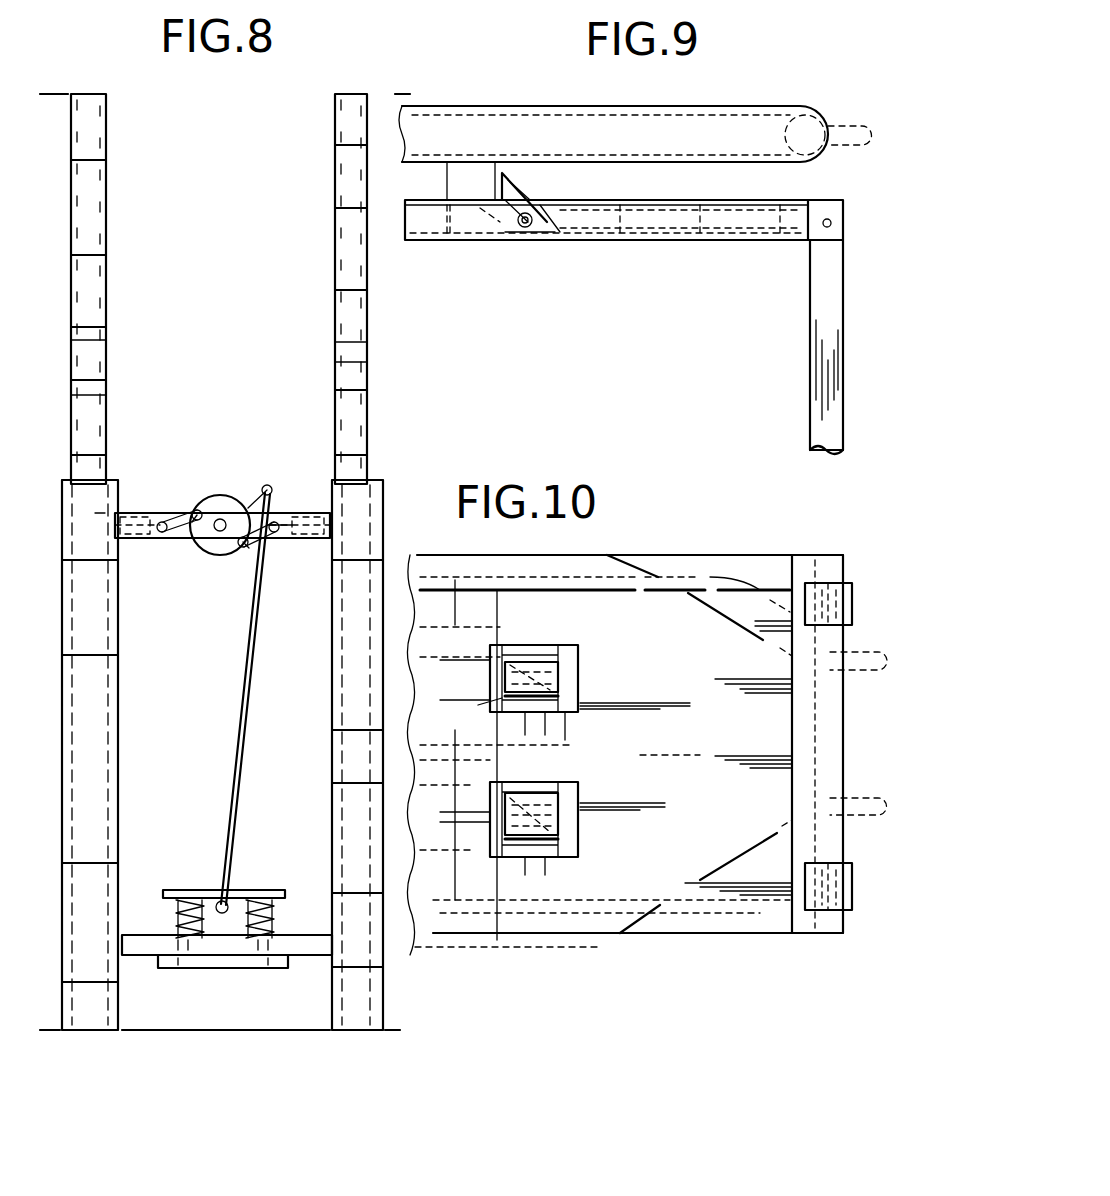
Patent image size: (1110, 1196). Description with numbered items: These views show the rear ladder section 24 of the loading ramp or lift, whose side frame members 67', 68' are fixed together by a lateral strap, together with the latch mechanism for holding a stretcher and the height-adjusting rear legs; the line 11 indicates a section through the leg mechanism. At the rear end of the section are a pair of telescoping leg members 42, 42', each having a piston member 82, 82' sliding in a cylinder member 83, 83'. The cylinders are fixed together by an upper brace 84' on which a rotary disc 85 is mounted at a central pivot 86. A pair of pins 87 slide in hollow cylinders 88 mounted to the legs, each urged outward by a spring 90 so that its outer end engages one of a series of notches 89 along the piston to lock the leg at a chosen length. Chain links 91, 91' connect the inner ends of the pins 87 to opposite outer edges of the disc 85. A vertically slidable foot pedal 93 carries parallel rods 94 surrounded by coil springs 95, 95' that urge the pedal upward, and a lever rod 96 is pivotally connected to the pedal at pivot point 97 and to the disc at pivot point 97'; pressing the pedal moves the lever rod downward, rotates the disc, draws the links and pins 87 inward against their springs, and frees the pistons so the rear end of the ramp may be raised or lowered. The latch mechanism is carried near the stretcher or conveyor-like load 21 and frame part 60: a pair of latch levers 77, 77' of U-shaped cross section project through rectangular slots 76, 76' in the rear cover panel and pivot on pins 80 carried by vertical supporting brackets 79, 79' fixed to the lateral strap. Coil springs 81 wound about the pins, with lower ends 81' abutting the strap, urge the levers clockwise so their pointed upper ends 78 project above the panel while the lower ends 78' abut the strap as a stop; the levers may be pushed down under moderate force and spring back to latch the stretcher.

In FIG. 8, the section line 11 is at (223, 448).
In FIG. 9, the conveyor 21 is at (697, 106).
In FIG. 10, the conveyor 21 is at (607, 548).
In FIG. 9, the ladder section 24 is at (612, 242).
In FIG. 10, the ladder section 24 is at (760, 938).
In FIG. 8, the telescoping leg member 42 is at (123, 755).
In FIG. 9, the telescoping leg member 42 is at (847, 392).
In FIG. 10, the telescoping leg member 42 is at (854, 854).
In FIG. 8, the telescoping leg member 42' is at (381, 755).
In FIG. 10, the telescoping leg member 42' is at (854, 614).
In FIG. 9, the frame member 60 is at (833, 224).
In FIG. 10, the frame member 60 is at (830, 553).
In FIG. 9, the side frame member 67' is at (680, 262).
In FIG. 10, the side frame member 67' is at (590, 777).
In FIG. 9, the side frame member 68' is at (680, 193).
In FIG. 10, the side frame member 68' is at (605, 551).
In FIG. 10, the rectangular slot 76 is at (622, 833).
In FIG. 10, the rectangular slot 76' is at (635, 680).
In FIG. 9, the latch lever 77 is at (546, 198).
In FIG. 10, the latch lever 77 is at (564, 749).
In FIG. 9, the latch lever 77' is at (540, 137).
In FIG. 10, the latch lever 77' is at (579, 721).
In FIG. 9, the upper end 78 is at (510, 149).
In FIG. 10, the upper end 78 is at (500, 751).
In FIG. 9, the lower end 78' is at (557, 270).
In FIG. 10, the vertical supporting bracket 79 is at (533, 682).
In FIG. 10, the vertical supporting bracket 79' is at (555, 725).
In FIG. 9, the pin 80 is at (530, 232).
In FIG. 10, the pin 80 is at (535, 710).
In FIG. 10, the coil spring 81 is at (526, 827).
In FIG. 9, the lower end of coil spring 81' is at (505, 252).
In FIG. 8, the piston member 82 is at (118, 289).
In FIG. 9, the piston member 82 is at (799, 345).
In FIG. 10, the piston member 82 is at (858, 869).
In FIG. 8, the piston member 82' is at (324, 289).
In FIG. 10, the piston member 82' is at (864, 606).
In FIG. 8, the cylinder member 83 is at (113, 755).
In FIG. 8, the cylinder member 83' is at (334, 755).
In FIG. 8, the upper lateral brace 84' is at (222, 548).
In FIG. 8, the rotary disc 85 is at (236, 497).
In FIG. 8, the hub 86 is at (222, 534).
In FIG. 8, the pin 87 is at (128, 540).
In FIG. 8, the hollow cylinder 88 is at (289, 540).
In FIG. 8, the notch 89 is at (110, 395).
In FIG. 8, the spring 90 is at (148, 512).
In FIG. 8, the chain link 91 is at (188, 568).
In FIG. 8, the chain link 91' is at (272, 579).
In FIG. 8, the foot pedal 93 is at (178, 892).
In FIG. 8, the rod 94 is at (276, 918).
In FIG. 8, the coil spring 95 is at (168, 884).
In FIG. 8, the coil spring 95' is at (285, 916).
In FIG. 8, the lever rod 96 is at (244, 758).
In FIG. 8, the pivot point 97 is at (249, 875).
In FIG. 8, the pivot point 97' is at (281, 459).